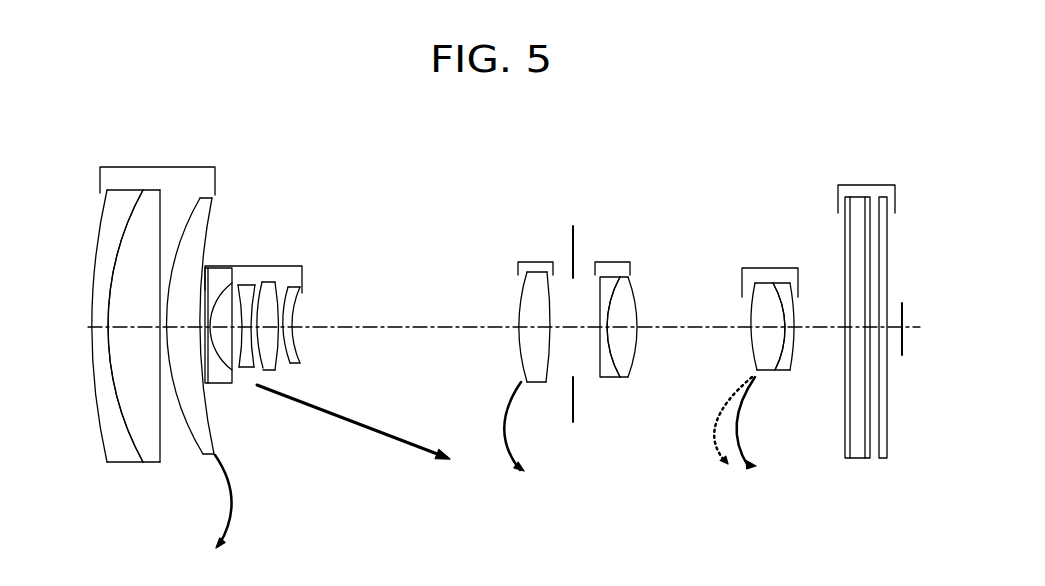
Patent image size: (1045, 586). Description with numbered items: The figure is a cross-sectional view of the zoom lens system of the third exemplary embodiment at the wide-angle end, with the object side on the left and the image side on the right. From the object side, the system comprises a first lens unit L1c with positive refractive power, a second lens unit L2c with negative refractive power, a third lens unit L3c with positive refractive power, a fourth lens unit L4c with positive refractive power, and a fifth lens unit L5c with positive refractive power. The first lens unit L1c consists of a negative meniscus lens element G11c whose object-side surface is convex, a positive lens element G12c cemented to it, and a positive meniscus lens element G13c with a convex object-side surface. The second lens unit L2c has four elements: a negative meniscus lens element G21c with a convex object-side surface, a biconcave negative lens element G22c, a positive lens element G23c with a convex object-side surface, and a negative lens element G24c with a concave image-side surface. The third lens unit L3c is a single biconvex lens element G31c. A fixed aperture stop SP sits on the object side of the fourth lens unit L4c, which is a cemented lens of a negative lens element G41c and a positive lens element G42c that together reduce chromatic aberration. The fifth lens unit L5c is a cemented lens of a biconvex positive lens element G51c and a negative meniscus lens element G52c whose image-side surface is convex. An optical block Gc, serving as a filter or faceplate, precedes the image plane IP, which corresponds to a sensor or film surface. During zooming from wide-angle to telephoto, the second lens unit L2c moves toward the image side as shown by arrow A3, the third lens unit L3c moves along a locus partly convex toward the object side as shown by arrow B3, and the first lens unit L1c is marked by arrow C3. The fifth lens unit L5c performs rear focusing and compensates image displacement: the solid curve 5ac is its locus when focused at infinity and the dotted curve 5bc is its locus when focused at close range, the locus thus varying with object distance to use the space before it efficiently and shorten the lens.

The first lens unit L1c is at (143, 354).
The second lens unit L2c is at (300, 343).
The third lens unit L3c is at (548, 348).
The fourth lens unit L4c is at (636, 358).
The fifth lens unit L5c is at (754, 279).
The lens element with negative refractive power G11c is at (113, 462).
The lens element with positive refractive power G12c is at (150, 462).
The lens element with positive refractive power G13c is at (205, 457).
The lens element with negative refractive power G21c is at (225, 378).
The lens element with negative refractive power G22c is at (253, 385).
The lens element with positive refractive power G23c is at (268, 370).
The lens element with negative refractive power G24c is at (302, 312).
The biconvex lens element G31c is at (533, 383).
The negative lens element G41c is at (607, 380).
The positive lens element G42c is at (622, 377).
The lens element with positive refractive power G51c is at (752, 323).
The lens element with negative refractive power G52c is at (797, 317).
The aperture stop SP is at (577, 245).
The optical block Gc is at (866, 306).
The image plane IP is at (902, 317).
The movement of second lens unit A3 is at (353, 431).
The movement of third lens unit B3 is at (496, 426).
The movement locus arrow of first lens unit during zooming C3 is at (245, 501).
The solid curve 5ac is at (737, 438).
The dotted curve 5bc is at (712, 435).